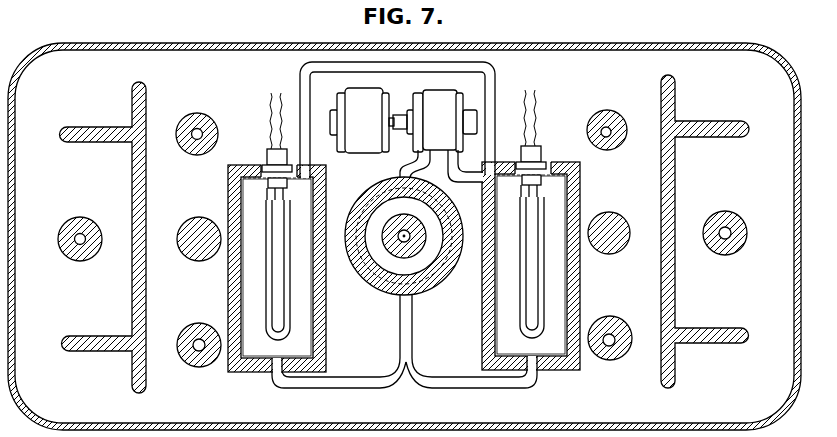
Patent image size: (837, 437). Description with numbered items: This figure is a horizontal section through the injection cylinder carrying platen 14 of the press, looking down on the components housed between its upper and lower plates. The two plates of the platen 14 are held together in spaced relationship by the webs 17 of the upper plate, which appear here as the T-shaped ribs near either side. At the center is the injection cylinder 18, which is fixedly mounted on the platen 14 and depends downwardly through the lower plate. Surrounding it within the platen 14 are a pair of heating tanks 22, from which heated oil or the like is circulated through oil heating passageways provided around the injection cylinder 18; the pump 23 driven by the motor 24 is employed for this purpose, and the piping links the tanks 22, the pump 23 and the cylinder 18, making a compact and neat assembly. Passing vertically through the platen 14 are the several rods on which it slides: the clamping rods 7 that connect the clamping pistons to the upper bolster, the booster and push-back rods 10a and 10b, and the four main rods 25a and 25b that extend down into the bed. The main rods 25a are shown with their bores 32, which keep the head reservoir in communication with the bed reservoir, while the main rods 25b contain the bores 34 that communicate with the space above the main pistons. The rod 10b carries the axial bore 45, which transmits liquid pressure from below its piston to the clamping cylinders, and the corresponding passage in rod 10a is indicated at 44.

The injection cylinder carrying platen 14 is at (280, 41).
The webs 17 is at (131, 175).
The clamping rods 7 is at (212, 200).
The main rods 25b is at (203, 237).
The bores 34 is at (200, 132).
The main rods 25a is at (620, 223).
The bores 32 is at (613, 130).
The booster and push-back rod 10b is at (74, 246).
The axial bore 45 is at (80, 236).
The booster and push-back rod 10a is at (738, 233).
The pin 44 is at (727, 233).
The heating tanks 22 is at (260, 373).
The motor 24 is at (367, 116).
The pump 23 is at (450, 114).
The injection cylinder 18 is at (382, 298).